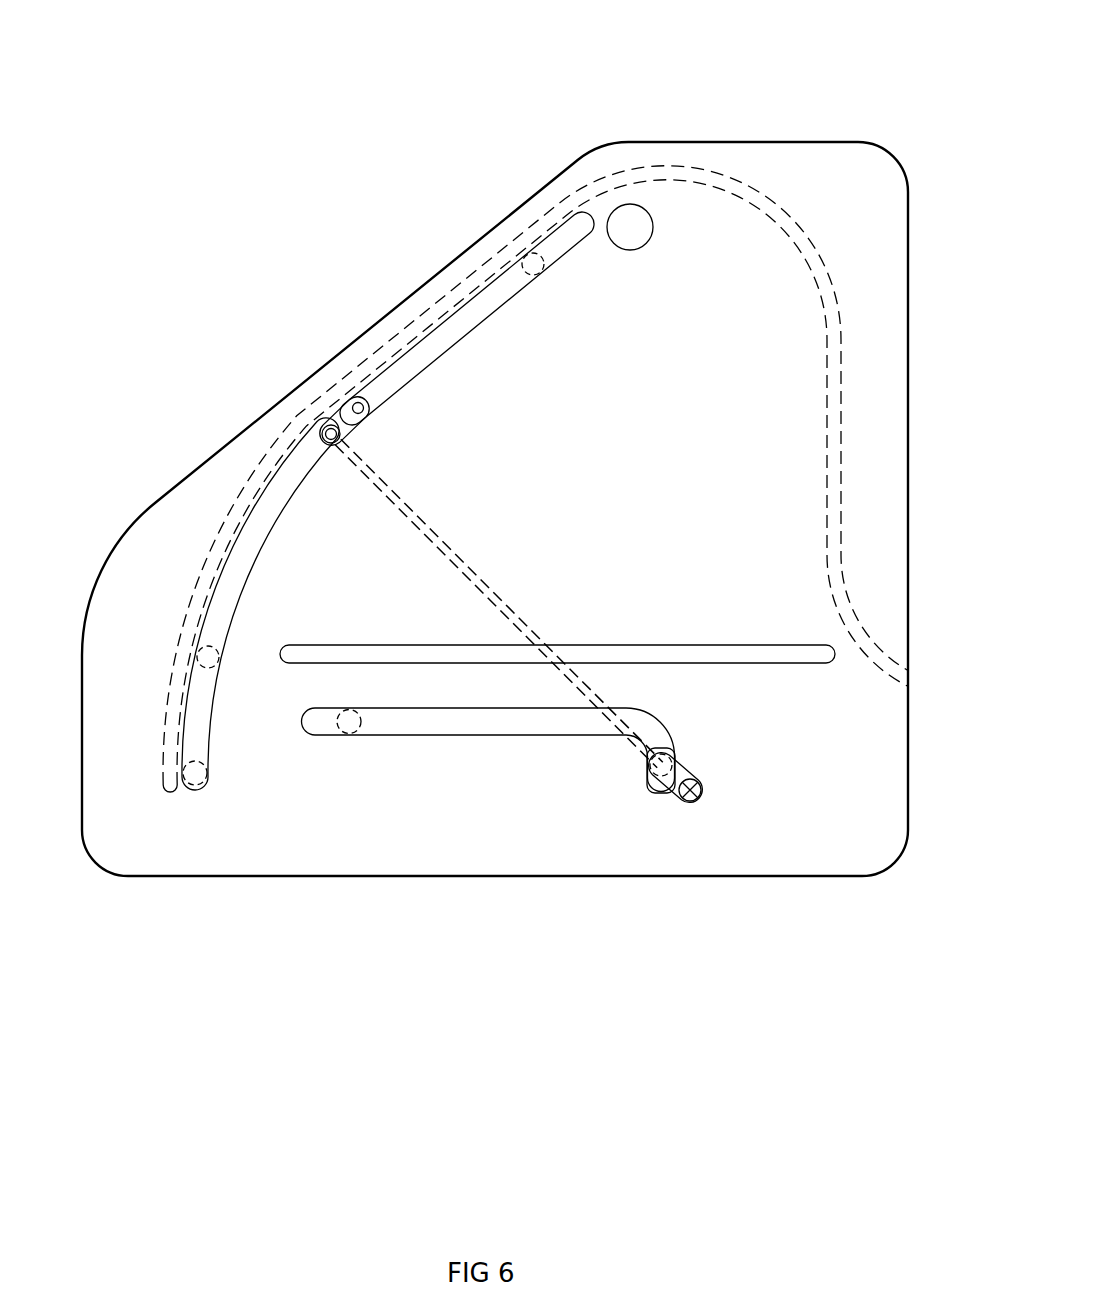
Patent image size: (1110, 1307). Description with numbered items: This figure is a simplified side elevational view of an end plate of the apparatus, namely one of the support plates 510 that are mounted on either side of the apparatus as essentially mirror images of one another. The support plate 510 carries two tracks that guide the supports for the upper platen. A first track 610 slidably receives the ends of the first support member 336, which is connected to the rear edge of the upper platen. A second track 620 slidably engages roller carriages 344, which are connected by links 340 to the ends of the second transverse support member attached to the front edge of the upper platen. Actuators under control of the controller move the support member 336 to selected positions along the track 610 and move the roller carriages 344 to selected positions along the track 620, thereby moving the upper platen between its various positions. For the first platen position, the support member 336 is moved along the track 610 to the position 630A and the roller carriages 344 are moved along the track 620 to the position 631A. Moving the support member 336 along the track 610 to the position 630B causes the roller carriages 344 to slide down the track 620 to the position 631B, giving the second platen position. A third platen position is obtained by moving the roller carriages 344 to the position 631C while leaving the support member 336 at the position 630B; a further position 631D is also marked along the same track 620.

The support plate 510 is at (835, 165).
The track 620 is at (479, 288).
The roller carriage position 631A is at (532, 255).
The link 340 is at (325, 429).
The roller carriage 344 is at (353, 400).
The roller carriage position 631B is at (322, 436).
The roller carriage position 631C is at (205, 645).
The roller 631D is at (194, 783).
The track 610 is at (648, 728).
The support member position 630A is at (350, 733).
The support member position 630B is at (668, 778).
The first support member 336 is at (690, 765).